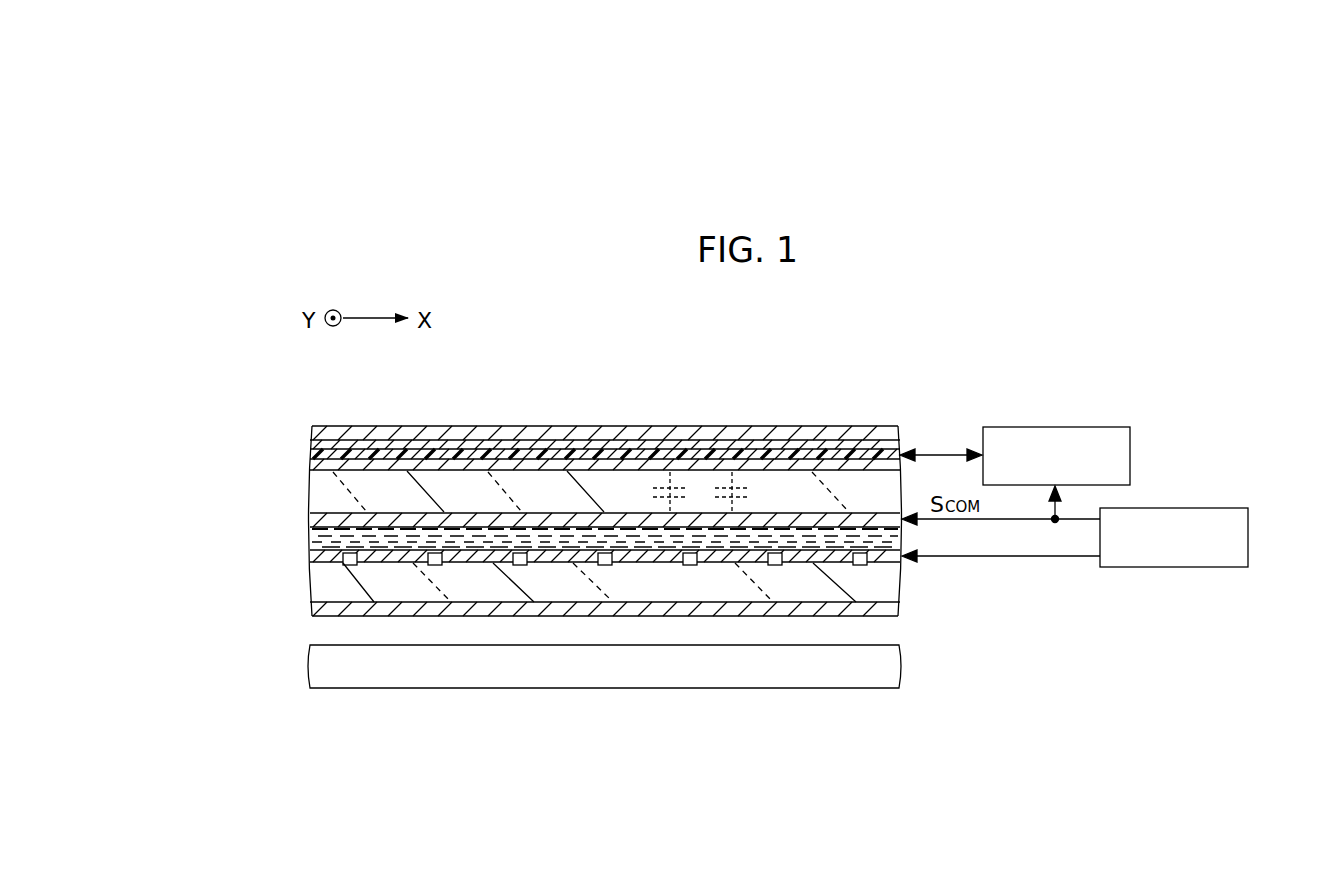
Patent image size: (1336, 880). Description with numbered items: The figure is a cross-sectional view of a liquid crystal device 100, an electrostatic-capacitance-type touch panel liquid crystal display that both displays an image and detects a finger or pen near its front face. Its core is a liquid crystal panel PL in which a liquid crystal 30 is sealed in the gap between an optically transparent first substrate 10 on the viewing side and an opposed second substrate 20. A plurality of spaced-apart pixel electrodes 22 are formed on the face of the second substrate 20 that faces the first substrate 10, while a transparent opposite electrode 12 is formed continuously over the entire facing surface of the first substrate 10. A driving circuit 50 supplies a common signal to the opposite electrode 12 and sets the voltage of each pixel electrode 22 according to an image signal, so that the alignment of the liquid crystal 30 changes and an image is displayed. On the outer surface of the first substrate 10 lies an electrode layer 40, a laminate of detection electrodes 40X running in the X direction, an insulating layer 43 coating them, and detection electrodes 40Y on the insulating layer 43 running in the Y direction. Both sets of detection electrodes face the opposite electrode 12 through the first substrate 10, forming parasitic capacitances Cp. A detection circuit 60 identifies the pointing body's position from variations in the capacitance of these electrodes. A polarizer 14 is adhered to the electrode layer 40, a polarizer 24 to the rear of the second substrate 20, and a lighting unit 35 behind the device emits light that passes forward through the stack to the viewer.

The liquid crystal device 100 is at (789, 356).
The liquid crystal panel PL is at (938, 604).
The polarizer 14 is at (325, 432).
The electrode layer 40 is at (197, 468).
The detection electrodes 40Y is at (309, 444).
The insulating layer 43 is at (309, 455).
The detection electrodes 40X is at (309, 465).
The first substrate 10 is at (318, 494).
The opposite electrode 12 is at (313, 522).
The liquid crystal 30 is at (311, 548).
The pixel electrodes 22 is at (375, 564).
The second substrate 20 is at (318, 587).
The polarizer 24 is at (312, 612).
The lighting unit 35 is at (322, 667).
The parasitic capacitances Cp is at (702, 492).
The detection circuit 60 is at (1131, 453).
The driving circuit 50 is at (1249, 528).